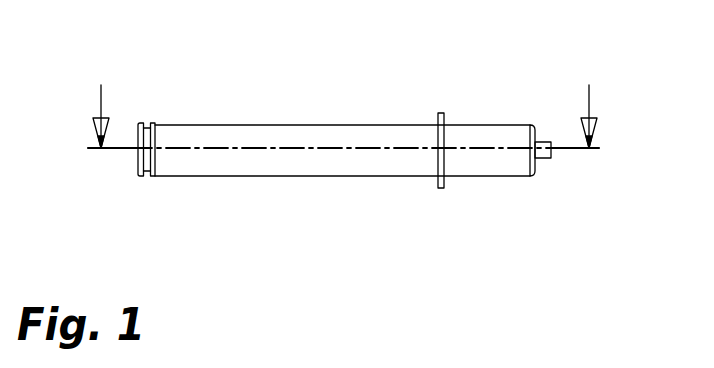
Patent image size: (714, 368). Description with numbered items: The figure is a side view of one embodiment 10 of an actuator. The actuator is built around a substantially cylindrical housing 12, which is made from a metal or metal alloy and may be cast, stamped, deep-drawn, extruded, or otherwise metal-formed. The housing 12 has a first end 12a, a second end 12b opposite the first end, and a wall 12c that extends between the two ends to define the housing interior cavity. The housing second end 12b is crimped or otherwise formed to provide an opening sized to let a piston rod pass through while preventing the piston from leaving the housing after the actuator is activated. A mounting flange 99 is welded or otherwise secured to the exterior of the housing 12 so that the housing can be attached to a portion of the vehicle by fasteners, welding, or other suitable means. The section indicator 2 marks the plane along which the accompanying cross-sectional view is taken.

The section line 2- 2 is at (342, 90).
The actuator 10 is at (177, 34).
The housing 12 is at (322, 166).
The first end 12a is at (140, 163).
The second end 12b is at (534, 164).
The wall 12c is at (231, 135).
The mounting flange 99 is at (447, 110).